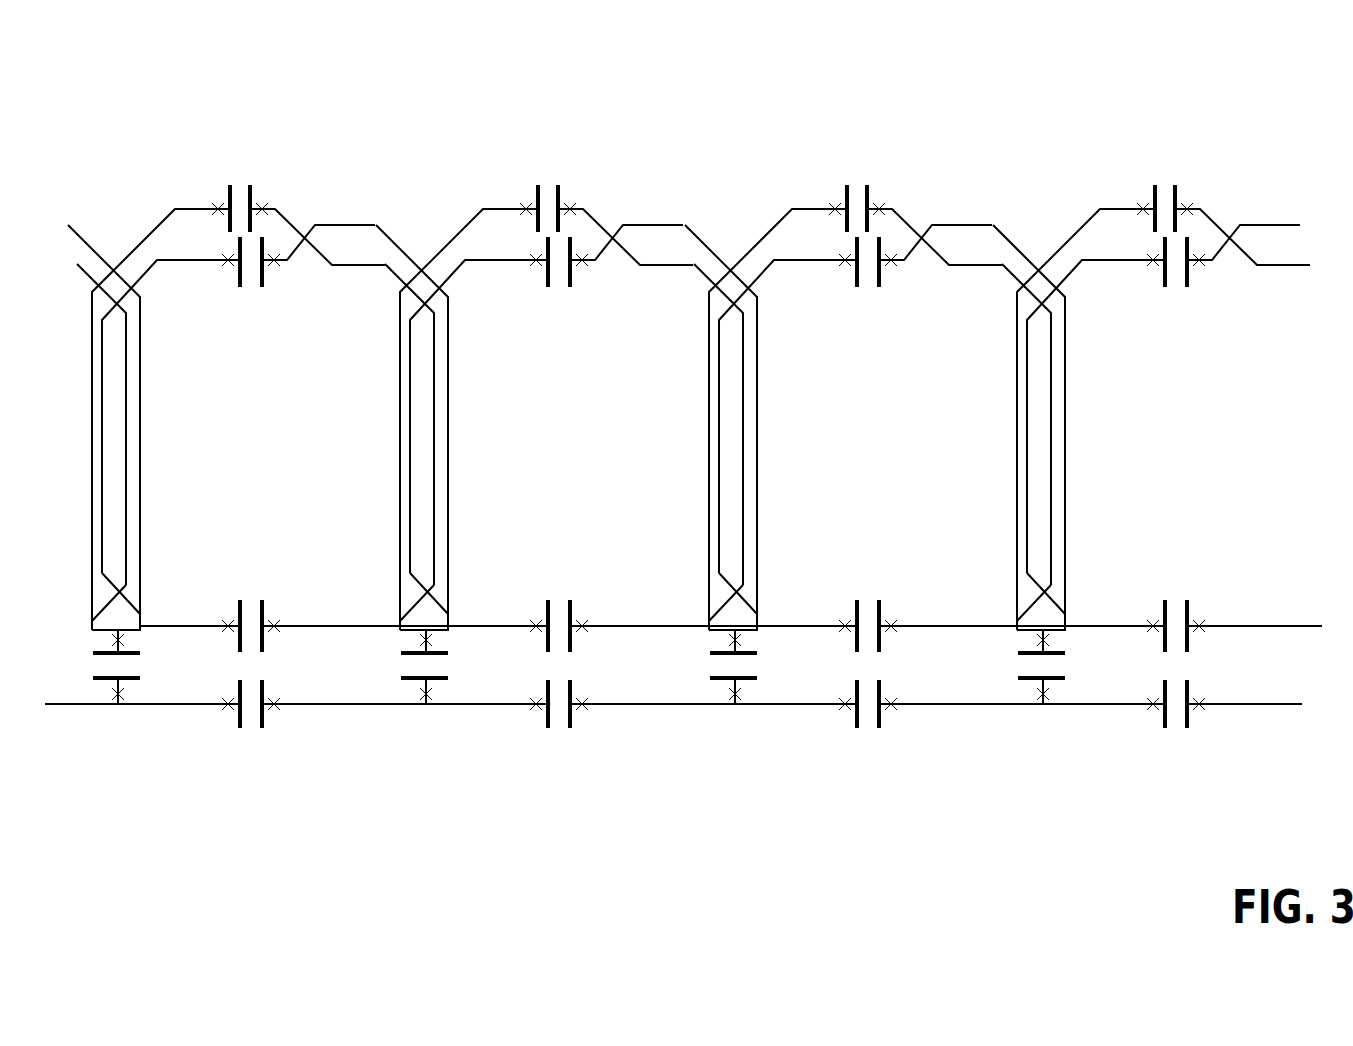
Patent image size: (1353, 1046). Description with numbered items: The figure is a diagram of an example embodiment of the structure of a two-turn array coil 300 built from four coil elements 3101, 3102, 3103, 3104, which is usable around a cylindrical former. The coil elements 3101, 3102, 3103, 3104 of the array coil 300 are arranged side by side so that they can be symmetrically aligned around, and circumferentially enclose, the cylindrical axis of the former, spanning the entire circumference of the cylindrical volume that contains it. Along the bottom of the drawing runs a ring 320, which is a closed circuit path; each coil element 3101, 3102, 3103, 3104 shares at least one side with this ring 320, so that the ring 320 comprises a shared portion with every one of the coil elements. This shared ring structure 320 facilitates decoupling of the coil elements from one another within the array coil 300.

The two-turn array coil 300 is at (1034, 38).
The coil element 3101 is at (254, 146).
The coil element 3102 is at (562, 146).
The coil element 3103 is at (870, 146).
The coil element 3104 is at (1178, 146).
The ring 320 is at (963, 778).